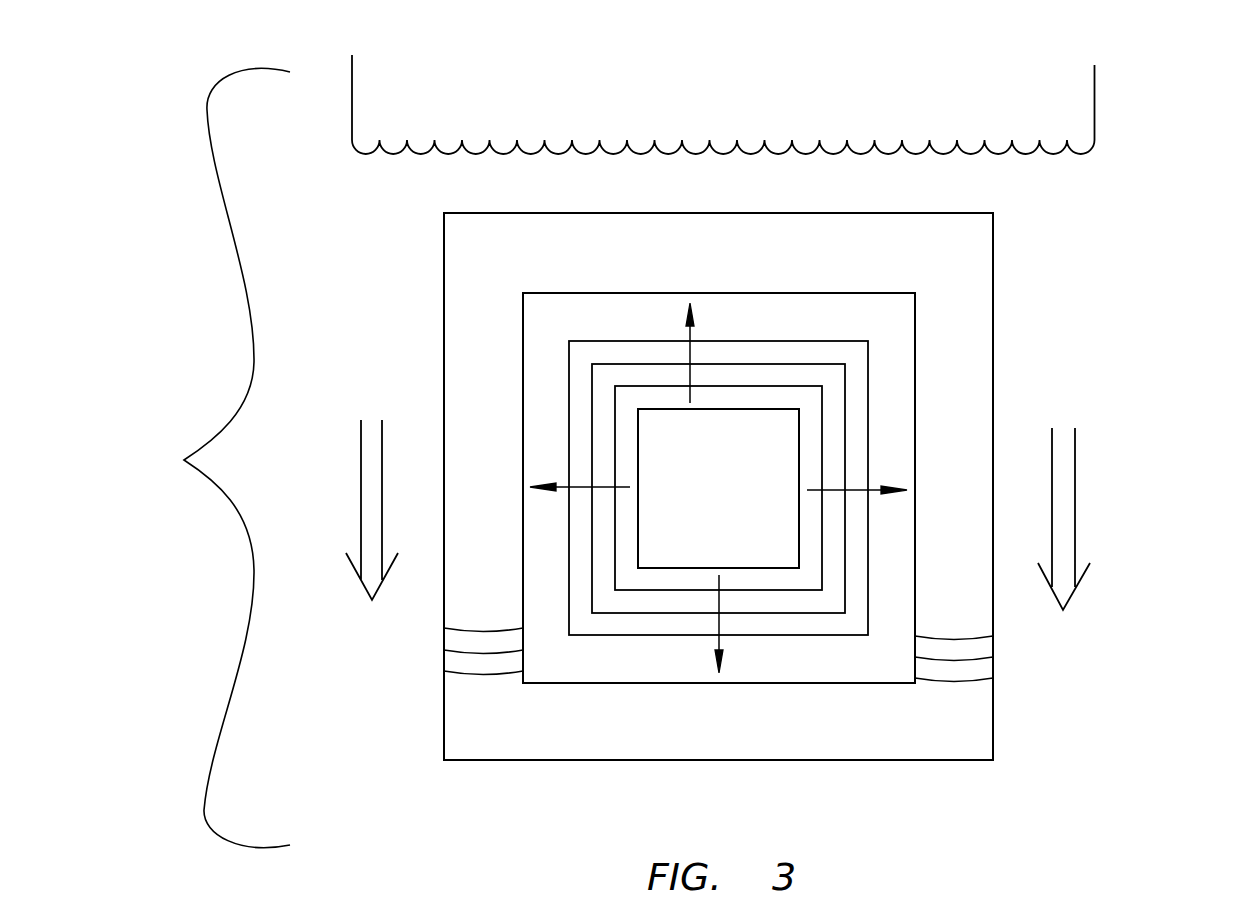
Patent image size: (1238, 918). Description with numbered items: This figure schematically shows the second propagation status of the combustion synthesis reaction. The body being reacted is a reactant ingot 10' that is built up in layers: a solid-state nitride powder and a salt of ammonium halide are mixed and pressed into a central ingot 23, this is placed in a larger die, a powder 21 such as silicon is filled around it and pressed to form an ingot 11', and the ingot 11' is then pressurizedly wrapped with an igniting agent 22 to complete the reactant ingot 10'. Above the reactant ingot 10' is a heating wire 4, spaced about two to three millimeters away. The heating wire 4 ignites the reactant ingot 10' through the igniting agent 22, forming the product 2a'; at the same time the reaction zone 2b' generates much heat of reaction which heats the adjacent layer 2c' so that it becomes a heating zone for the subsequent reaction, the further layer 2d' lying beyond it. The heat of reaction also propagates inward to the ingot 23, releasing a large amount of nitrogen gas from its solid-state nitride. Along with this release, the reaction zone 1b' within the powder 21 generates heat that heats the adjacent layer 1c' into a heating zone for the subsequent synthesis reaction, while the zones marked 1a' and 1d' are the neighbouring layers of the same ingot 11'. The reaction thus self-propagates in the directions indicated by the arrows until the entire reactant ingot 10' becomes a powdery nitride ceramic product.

The heating wire 4 is at (825, 152).
The igniting agent 22 is at (968, 287).
The reactant ingot 10' is at (396, 278).
The powder 21 is at (895, 358).
The ingot 11' is at (868, 264).
The outer zone 1d' is at (718, 435).
The adjacent layer 1c' is at (718, 424).
The reaction zone 1b' is at (718, 413).
The first zone 1a' is at (727, 402).
The ingot 23 is at (787, 430).
The product 2a' is at (718, 621).
The reaction zone 2b' is at (721, 636).
The adjacent layer 2c' is at (722, 693).
The side band d 2d' is at (720, 695).